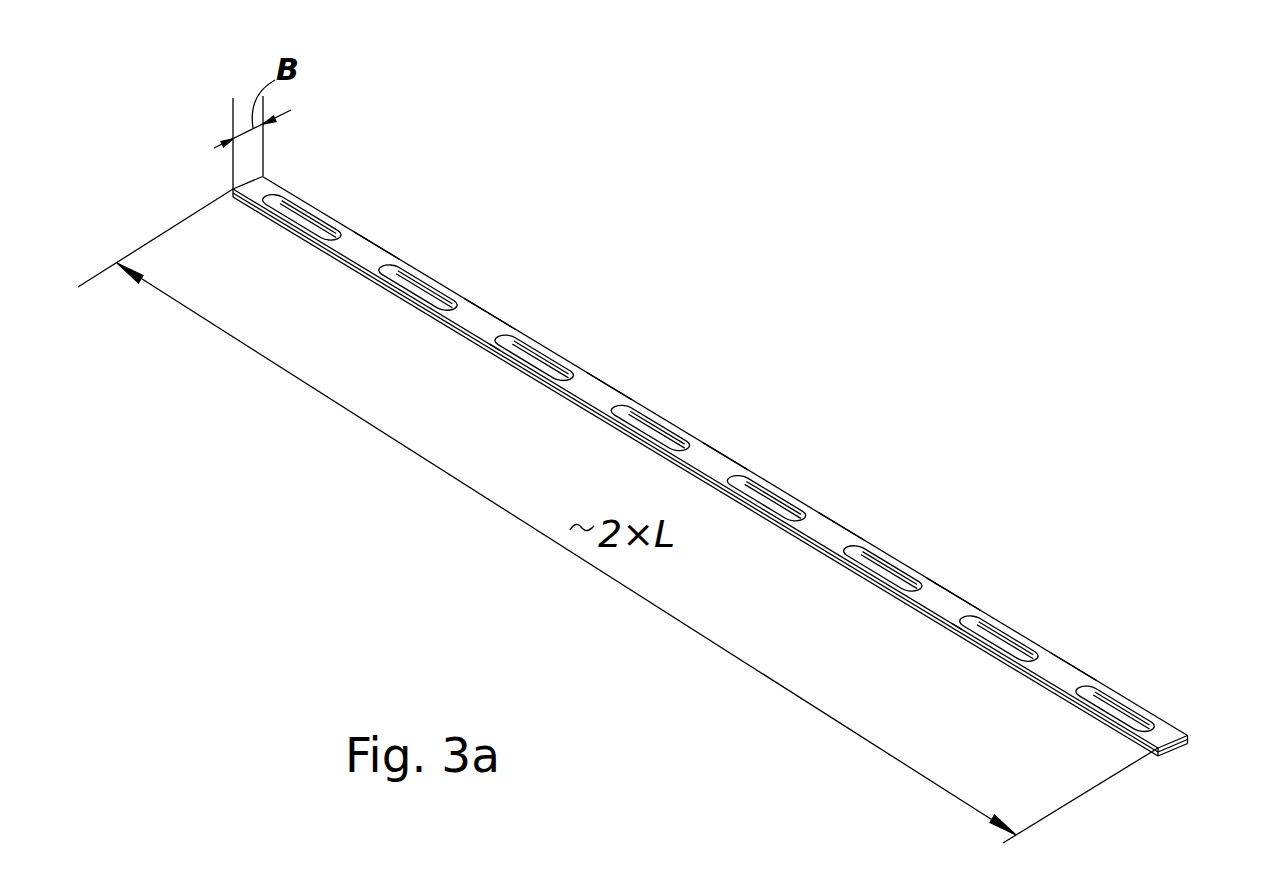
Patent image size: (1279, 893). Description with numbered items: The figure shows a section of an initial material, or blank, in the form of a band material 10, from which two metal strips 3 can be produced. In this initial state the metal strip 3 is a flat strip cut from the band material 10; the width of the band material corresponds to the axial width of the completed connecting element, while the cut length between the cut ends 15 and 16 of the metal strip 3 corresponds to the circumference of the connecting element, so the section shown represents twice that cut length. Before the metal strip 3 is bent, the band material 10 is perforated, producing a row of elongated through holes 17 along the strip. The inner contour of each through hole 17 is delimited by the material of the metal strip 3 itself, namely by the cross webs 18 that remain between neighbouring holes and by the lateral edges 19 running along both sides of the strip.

The metal strip 3 is at (264, 176).
The band material 10 is at (1050, 663).
The cut end 15 is at (715, 450).
The cut end 16 is at (248, 182).
The through hole 17 is at (313, 207).
The cross web 18 is at (360, 240).
The lateral edge 19 is at (438, 282).